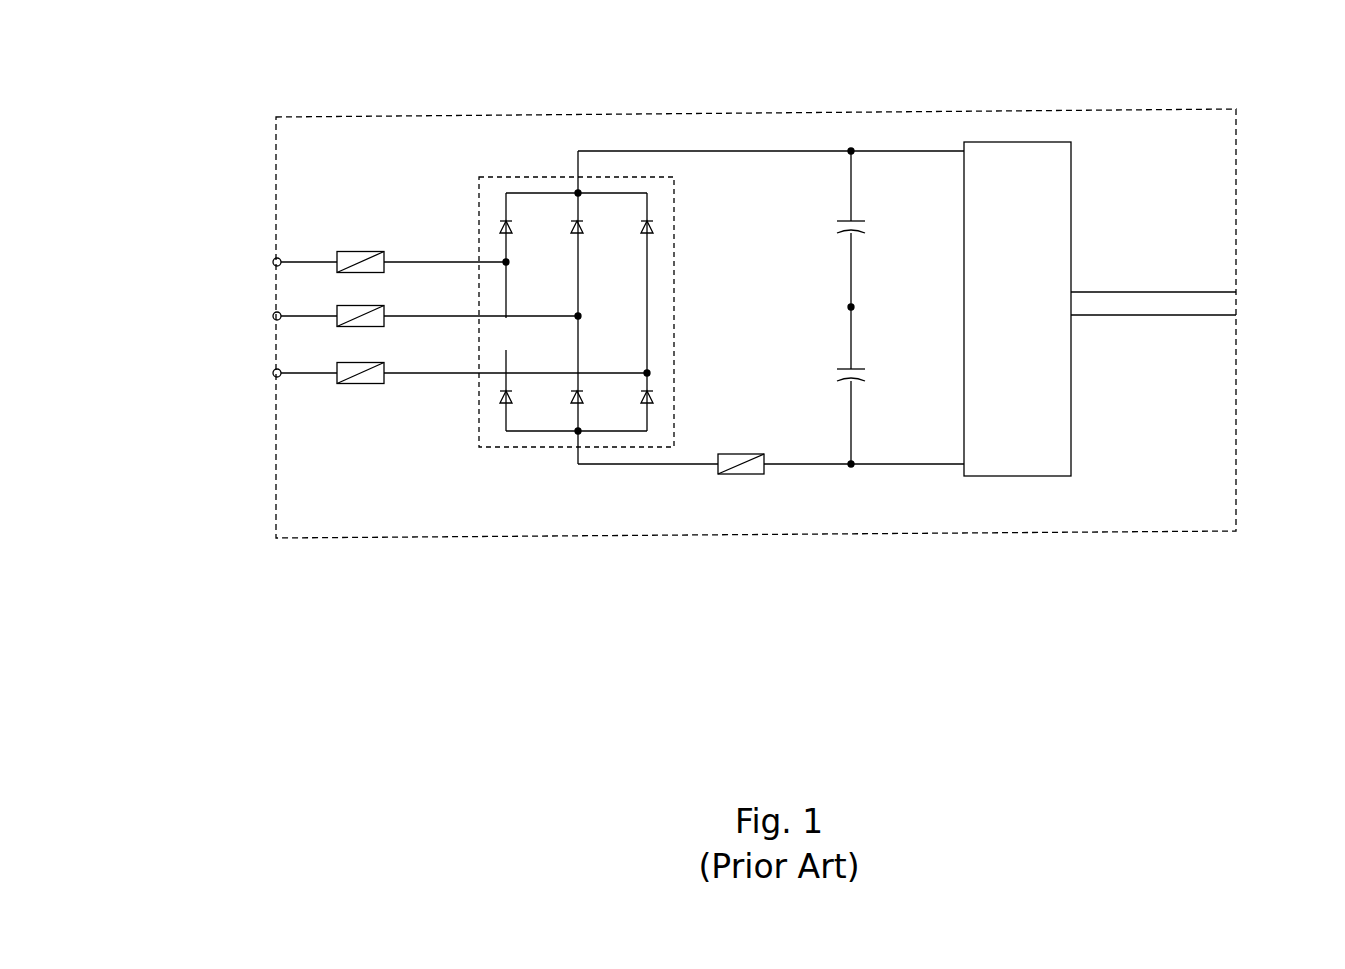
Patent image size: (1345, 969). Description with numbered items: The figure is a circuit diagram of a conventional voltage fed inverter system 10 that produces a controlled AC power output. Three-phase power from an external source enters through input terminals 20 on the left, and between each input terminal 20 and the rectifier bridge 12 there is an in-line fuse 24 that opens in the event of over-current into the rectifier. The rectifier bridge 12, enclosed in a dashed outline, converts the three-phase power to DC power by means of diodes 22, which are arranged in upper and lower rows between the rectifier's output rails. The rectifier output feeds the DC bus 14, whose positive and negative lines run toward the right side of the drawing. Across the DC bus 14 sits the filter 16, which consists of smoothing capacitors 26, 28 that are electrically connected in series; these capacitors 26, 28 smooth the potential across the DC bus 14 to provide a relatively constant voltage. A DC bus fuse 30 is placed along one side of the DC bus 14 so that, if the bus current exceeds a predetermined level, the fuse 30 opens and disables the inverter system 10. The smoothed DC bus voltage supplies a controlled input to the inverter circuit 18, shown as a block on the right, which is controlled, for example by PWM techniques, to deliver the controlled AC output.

The voltage fed inverter system 10 is at (1247, 158).
The rectifier bridge 12 is at (523, 177).
The DC bus 14 is at (890, 151).
The filter 16 is at (793, 278).
The inverter circuit 18 is at (1027, 170).
The input terminals 20 is at (215, 320).
The diodes 22 is at (563, 408).
The in-line fuse 24 is at (342, 362).
The smoothing capacitor 26 is at (825, 217).
The smoothing capacitor 28 is at (788, 387).
The DC bus fuse 30 is at (717, 463).